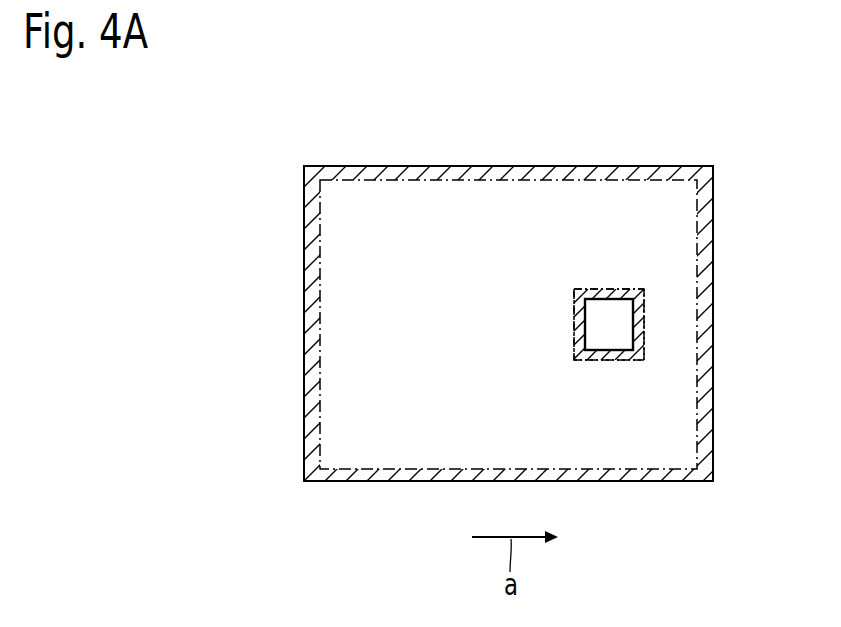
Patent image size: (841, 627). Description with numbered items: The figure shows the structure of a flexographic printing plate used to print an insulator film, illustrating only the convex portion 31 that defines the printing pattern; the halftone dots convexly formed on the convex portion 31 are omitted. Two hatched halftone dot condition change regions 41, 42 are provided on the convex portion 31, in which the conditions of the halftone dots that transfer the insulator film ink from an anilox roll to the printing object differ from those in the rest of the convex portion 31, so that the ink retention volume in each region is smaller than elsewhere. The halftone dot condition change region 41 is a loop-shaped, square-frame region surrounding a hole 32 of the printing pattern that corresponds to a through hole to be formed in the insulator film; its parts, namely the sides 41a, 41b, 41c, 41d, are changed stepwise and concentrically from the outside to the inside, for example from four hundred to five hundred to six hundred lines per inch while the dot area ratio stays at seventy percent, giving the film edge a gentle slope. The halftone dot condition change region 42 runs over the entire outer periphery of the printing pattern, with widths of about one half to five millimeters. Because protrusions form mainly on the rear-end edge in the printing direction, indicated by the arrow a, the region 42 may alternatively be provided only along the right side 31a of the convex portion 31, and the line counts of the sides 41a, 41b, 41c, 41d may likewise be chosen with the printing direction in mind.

The convex portion 31 is at (384, 166).
The right side of the convex portion 31a is at (713, 412).
The hole of the printing pattern 32 is at (640, 334).
The halftone dot condition change region 41 is at (635, 288).
The side of the halftone dot condition change region 41a is at (575, 320).
The side of the halftone dot condition change region 41b is at (643, 328).
The side of the halftone dot condition change region 41c is at (613, 292).
The side of the halftone dot condition change region 41d is at (612, 355).
The halftone dot condition change region 42 is at (686, 166).